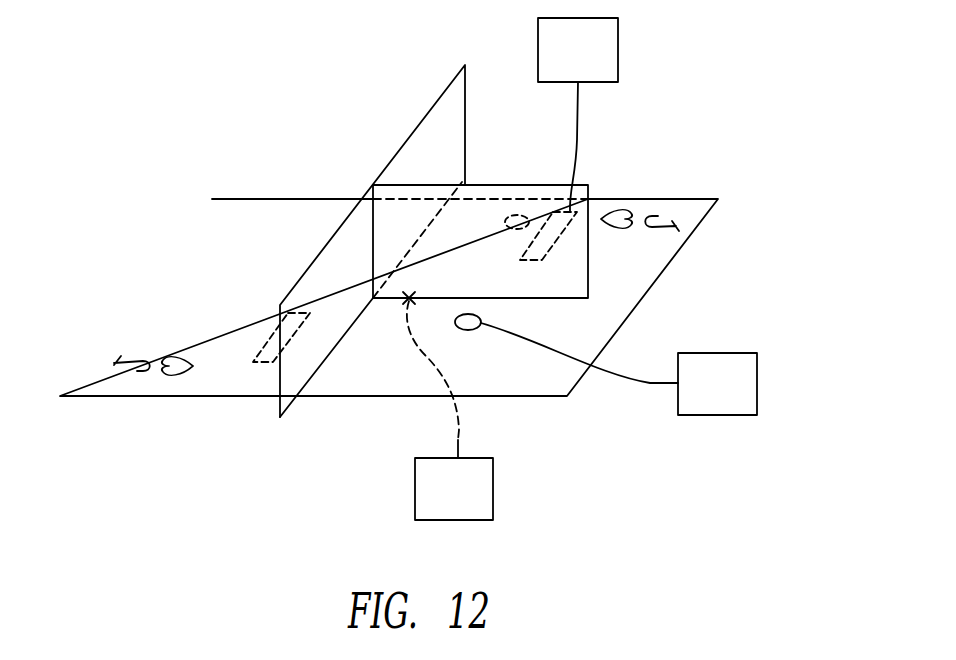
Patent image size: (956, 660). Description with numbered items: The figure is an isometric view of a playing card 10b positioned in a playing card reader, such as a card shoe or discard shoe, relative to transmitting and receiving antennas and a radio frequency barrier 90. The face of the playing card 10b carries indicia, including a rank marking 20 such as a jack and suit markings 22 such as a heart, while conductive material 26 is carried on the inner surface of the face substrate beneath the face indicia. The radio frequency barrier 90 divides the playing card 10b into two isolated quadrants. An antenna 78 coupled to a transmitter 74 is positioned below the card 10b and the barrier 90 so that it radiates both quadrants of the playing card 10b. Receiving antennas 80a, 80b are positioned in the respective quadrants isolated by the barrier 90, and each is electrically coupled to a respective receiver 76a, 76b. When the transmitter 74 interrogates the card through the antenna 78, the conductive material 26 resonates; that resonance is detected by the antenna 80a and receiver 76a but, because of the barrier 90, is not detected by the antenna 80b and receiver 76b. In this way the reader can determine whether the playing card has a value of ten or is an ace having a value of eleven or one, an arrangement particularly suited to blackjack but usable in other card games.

The playing card 10b is at (136, 297).
The rank marking 20 is at (115, 375).
The suit markings 22 is at (168, 378).
The conductive material 26 is at (260, 362).
The transmitter 74 is at (493, 488).
The receiver 76a is at (618, 45).
The receiver 76b is at (757, 388).
The antenna 78 is at (405, 301).
The antenna 80a is at (515, 214).
The antenna 80b is at (474, 330).
The radio frequency barrier 90 is at (486, 185).